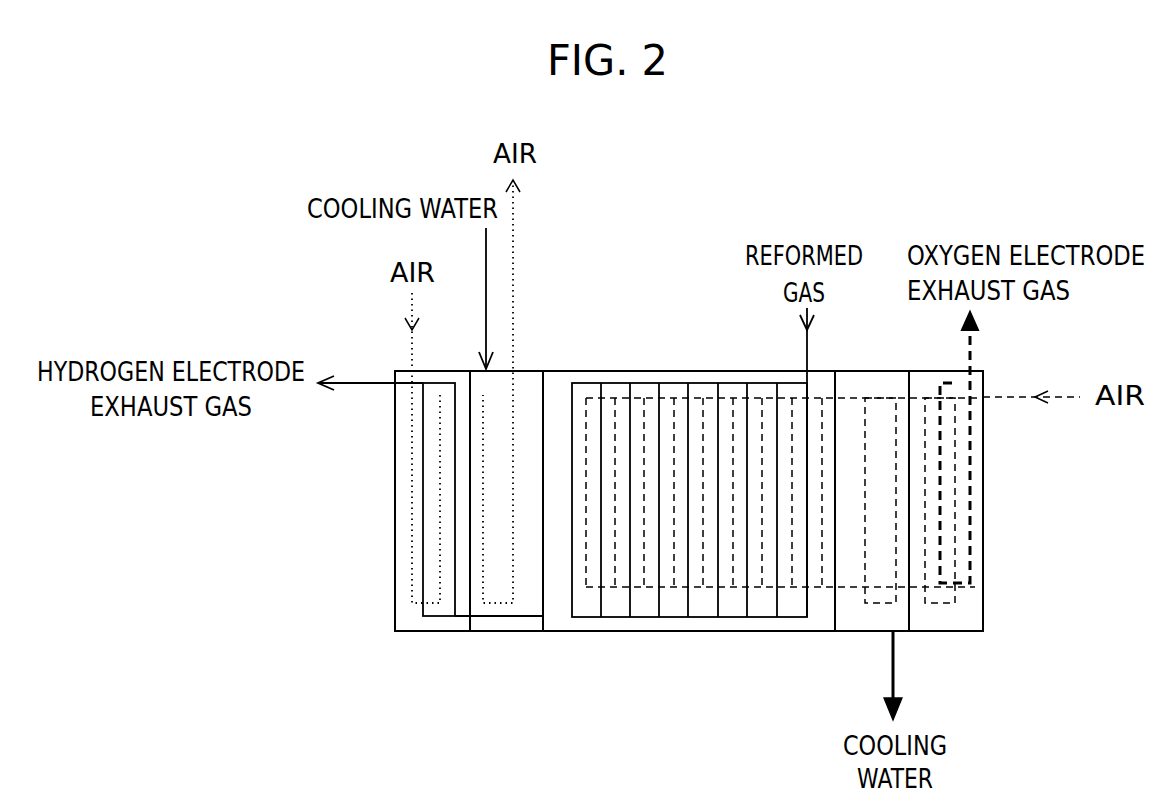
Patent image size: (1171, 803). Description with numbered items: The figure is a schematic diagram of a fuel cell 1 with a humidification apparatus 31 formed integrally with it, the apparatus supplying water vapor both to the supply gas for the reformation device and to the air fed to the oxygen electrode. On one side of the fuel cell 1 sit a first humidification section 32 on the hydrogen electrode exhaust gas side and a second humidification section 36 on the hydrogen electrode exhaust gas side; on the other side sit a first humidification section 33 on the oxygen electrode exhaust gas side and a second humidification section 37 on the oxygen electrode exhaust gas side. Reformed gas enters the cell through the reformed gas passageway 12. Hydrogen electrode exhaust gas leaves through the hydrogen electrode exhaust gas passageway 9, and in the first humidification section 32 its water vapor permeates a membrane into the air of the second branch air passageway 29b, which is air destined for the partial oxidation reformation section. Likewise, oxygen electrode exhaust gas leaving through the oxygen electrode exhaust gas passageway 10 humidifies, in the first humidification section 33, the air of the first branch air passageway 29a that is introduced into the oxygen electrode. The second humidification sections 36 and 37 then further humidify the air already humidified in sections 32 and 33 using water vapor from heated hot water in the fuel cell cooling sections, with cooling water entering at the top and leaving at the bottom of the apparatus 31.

The fuel cell 1 is at (685, 368).
The hydrogen electrode exhaust gas passageway 9 is at (365, 385).
The oxygen electrode exhaust gas passageway 10 is at (975, 352).
The reformed gas passageway 12 is at (807, 347).
The first branch air passageway 29a is at (1010, 400).
The second branch air passageway 29b is at (517, 257).
The humidification apparatus 31 is at (448, 656).
The first humidification section on the hydrogen electrode exhaust gas side 32 is at (407, 632).
The first humidification section on the oxygen electrode exhaust gas side 33 is at (950, 632).
The second humidification section on the hydrogen electrode exhaust gas side 36 is at (497, 632).
The second humidification section on the oxygen electrode exhaust gas side 37 is at (850, 632).